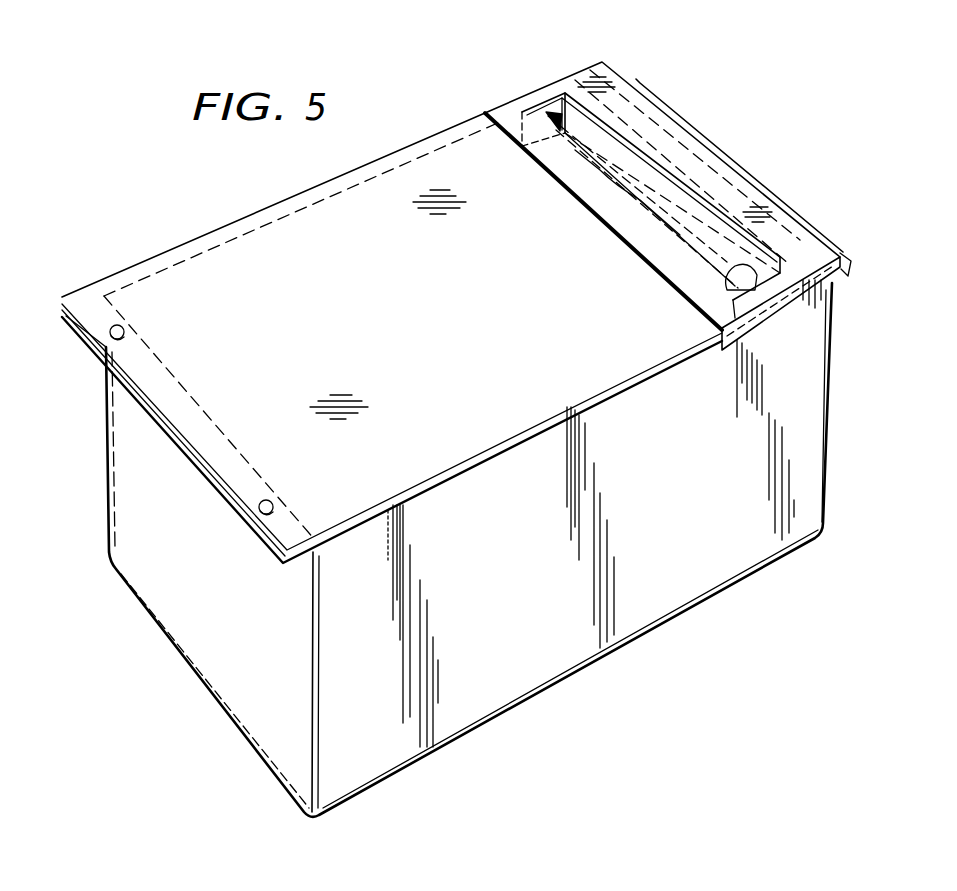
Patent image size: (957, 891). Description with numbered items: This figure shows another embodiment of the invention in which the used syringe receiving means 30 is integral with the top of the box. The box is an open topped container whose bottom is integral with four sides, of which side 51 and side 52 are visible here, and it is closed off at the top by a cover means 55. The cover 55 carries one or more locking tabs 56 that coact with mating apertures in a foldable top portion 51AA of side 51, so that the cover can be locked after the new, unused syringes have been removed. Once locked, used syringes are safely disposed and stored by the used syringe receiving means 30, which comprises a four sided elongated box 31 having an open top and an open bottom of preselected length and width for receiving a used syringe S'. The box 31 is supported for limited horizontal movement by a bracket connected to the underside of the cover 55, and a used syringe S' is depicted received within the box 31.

The used syringe receiving means 30 is at (727, 143).
The four sided elongated box 31 is at (543, 97).
The used syringe S' is at (652, 203).
The side 51 is at (173, 578).
The foldable top portion 51AA is at (74, 343).
The side 52 is at (693, 557).
The cover means 55 is at (273, 250).
The locking tabs 56 is at (124, 320).